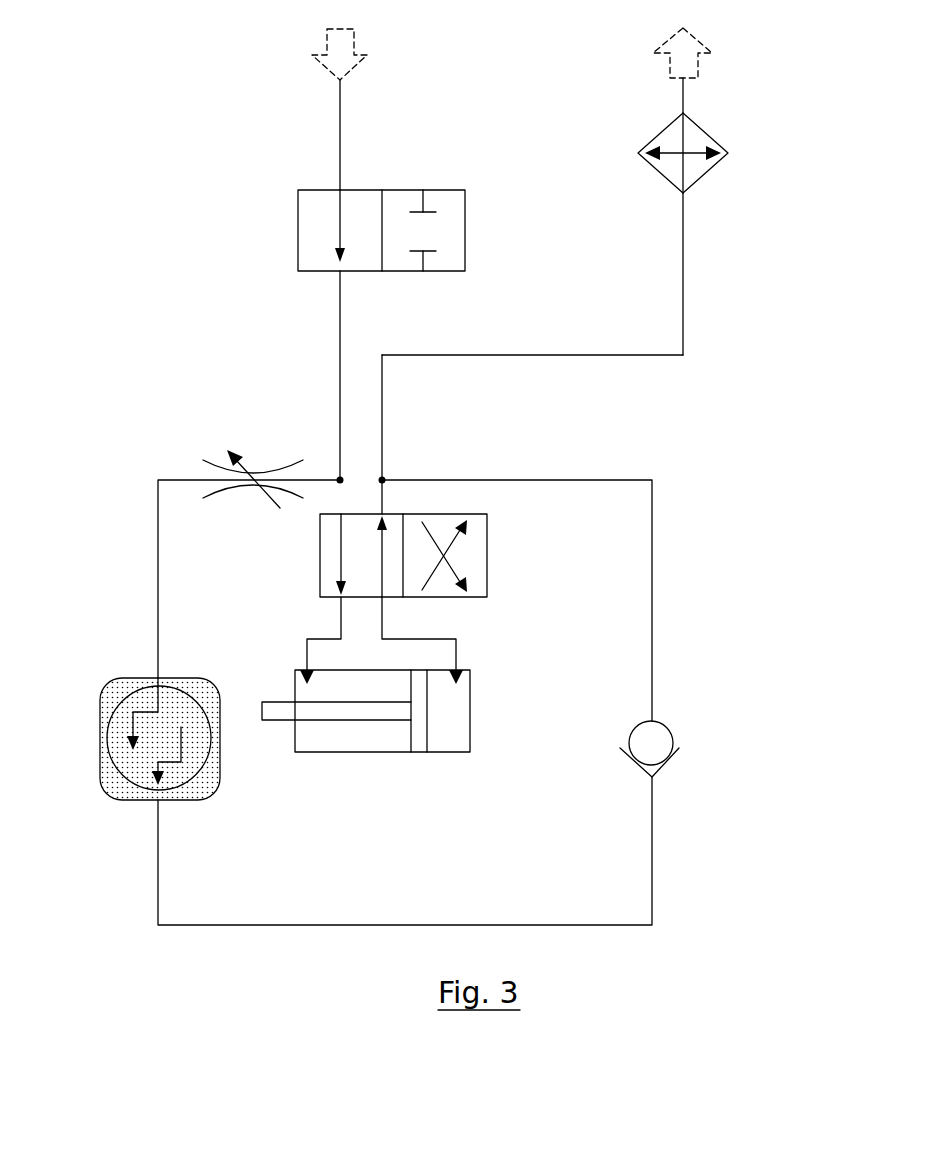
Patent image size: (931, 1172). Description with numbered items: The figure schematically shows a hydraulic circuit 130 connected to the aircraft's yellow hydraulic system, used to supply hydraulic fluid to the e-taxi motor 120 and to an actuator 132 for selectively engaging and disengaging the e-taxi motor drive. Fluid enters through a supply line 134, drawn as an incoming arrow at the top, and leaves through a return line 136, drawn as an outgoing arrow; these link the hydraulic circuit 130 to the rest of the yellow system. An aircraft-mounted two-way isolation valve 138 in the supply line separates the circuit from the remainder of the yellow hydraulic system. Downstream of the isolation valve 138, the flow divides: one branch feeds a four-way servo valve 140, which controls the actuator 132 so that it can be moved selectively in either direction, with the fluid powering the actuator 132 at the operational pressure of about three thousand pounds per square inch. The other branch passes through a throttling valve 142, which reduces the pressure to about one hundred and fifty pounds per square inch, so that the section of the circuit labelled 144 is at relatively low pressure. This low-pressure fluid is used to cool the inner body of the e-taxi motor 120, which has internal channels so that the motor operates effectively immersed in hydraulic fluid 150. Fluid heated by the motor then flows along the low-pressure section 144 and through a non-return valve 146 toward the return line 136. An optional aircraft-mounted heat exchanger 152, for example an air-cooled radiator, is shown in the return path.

The hydraulic circuit 130 is at (146, 106).
The supply line 134 is at (332, 70).
The return line 136 is at (703, 45).
The two-way isolation valve 138 is at (465, 241).
The heat exchanger 152 is at (702, 136).
The throttling valve 142 is at (273, 468).
The four-way servo valve 140 is at (481, 553).
The actuator 132 is at (450, 723).
The low-pressure section of the hydraulic circuit 144 is at (153, 595).
The non-return valve 146 is at (664, 738).
The e-taxi motor 120 is at (108, 688).
The hydraulic fluid 150 is at (130, 768).